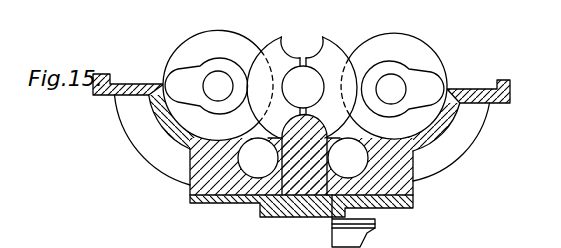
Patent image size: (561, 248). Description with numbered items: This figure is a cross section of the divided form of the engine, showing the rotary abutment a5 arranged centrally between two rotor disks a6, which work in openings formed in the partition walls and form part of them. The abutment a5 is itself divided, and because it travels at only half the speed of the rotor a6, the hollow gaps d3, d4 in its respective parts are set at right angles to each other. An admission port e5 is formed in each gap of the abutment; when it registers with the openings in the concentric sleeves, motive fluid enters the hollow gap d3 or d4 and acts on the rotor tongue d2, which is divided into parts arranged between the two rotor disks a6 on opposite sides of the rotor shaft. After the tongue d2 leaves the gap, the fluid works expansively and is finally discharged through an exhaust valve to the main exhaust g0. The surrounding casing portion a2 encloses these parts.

The rotor disk a6 is at (434, 41).
The rotary abutment a5 is at (355, 24).
The hollow gap d3 is at (292, 42).
The admission port e5 is at (304, 58).
The casing a2 is at (494, 132).
The rotor tongue d2 is at (443, 184).
The hollow gap d4 is at (305, 118).
The main exhaust g0 is at (364, 229).